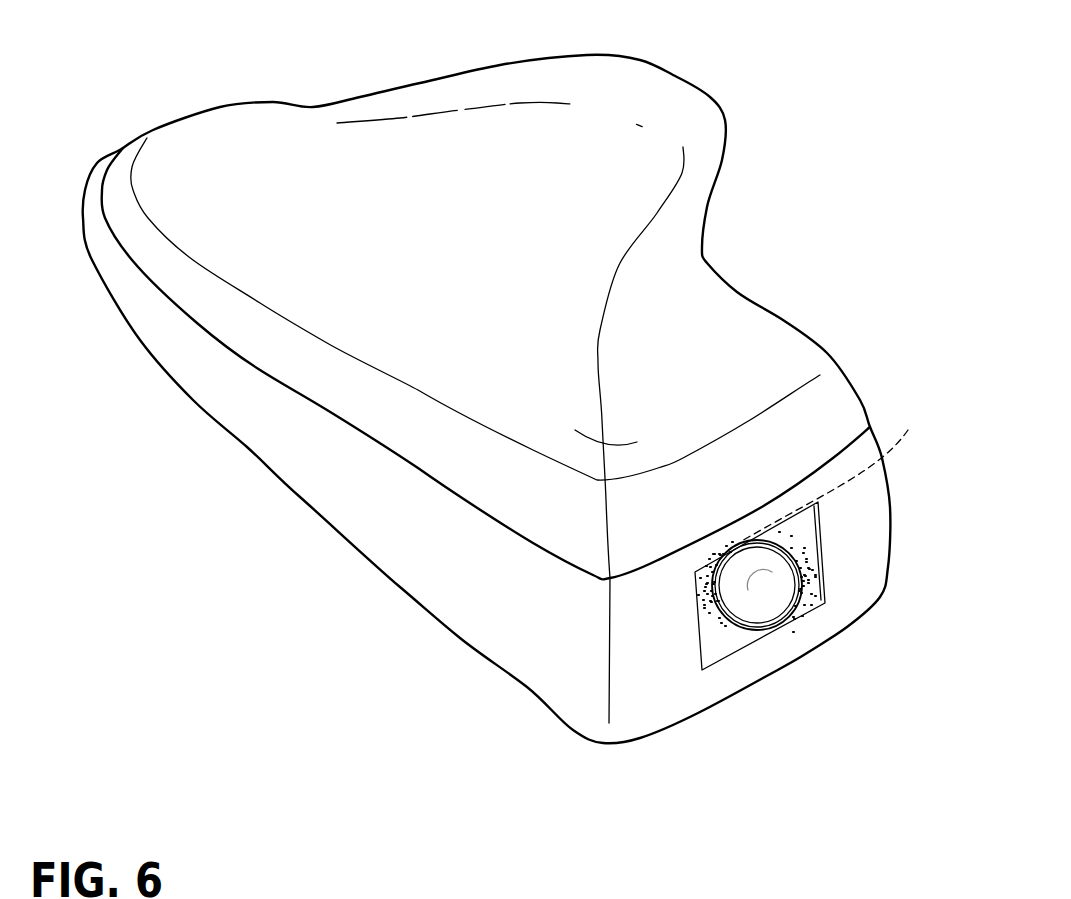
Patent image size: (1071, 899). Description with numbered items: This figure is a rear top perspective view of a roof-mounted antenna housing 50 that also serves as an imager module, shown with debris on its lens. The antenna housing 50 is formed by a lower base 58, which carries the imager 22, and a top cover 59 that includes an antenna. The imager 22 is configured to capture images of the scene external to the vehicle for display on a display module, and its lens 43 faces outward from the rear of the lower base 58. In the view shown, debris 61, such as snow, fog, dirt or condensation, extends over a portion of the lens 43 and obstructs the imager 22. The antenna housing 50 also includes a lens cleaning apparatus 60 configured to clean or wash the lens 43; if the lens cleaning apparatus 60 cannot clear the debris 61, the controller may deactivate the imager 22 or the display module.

The antenna housing 50 is at (308, 153).
The lower base 58 is at (488, 600).
The top cover 59 is at (712, 357).
The lens cleaning apparatus 60 is at (835, 470).
The debris 61 is at (718, 637).
The imager 22 is at (793, 525).
The lens 43 is at (762, 583).